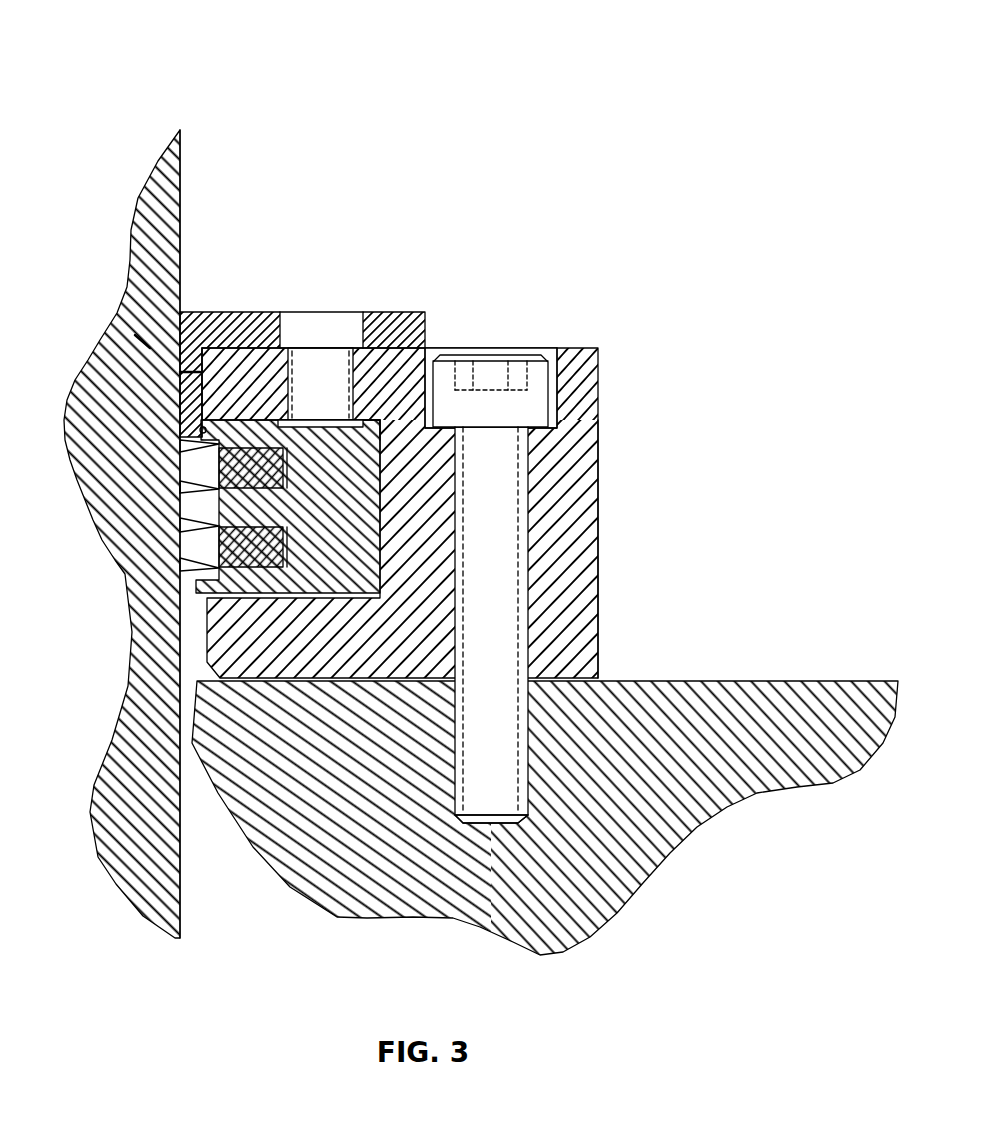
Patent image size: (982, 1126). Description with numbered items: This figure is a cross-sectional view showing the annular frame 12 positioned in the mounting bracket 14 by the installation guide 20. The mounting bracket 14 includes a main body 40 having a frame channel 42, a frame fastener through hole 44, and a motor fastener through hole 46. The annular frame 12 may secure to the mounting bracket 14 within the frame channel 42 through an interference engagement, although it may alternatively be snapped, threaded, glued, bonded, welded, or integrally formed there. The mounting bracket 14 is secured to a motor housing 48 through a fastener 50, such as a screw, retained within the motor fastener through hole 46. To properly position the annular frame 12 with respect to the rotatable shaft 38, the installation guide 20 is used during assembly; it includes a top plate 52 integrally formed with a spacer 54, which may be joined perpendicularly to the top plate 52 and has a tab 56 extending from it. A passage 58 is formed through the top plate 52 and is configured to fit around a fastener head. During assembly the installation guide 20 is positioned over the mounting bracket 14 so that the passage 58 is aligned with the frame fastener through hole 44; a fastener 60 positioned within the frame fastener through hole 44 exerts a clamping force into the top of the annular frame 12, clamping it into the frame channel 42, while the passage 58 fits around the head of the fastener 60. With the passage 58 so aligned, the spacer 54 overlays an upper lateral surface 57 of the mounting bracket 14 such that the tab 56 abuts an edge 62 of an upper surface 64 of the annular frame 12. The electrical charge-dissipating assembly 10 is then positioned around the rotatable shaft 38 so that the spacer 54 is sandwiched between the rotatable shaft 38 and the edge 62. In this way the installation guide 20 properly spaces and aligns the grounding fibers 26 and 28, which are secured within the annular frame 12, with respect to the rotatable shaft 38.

The electrical charge-dissipating assembly 10 is at (150, 44).
The annular frame 12 is at (198, 518).
The mounting bracket 14 is at (442, 480).
The installation guide 20 is at (302, 329).
The grounding fiber 26 is at (176, 447).
The grounding fiber 28 is at (206, 543).
The rotatable shaft 38 is at (150, 205).
The main body 40 is at (598, 565).
The frame channel 42 is at (386, 427).
The frame fastener through hole 44 is at (380, 425).
The motor fastener through hole 46 is at (565, 382).
The motor housing 48 is at (757, 690).
The fastener 50 is at (525, 393).
The top plate 52 is at (270, 312).
The spacer 54 is at (147, 345).
The tab 56 is at (200, 372).
The upper lateral surface 57 is at (216, 360).
The passage 58 is at (341, 338).
The fastener 60 is at (318, 322).
The edge 62 is at (200, 432).
The upper surface 64 is at (176, 489).